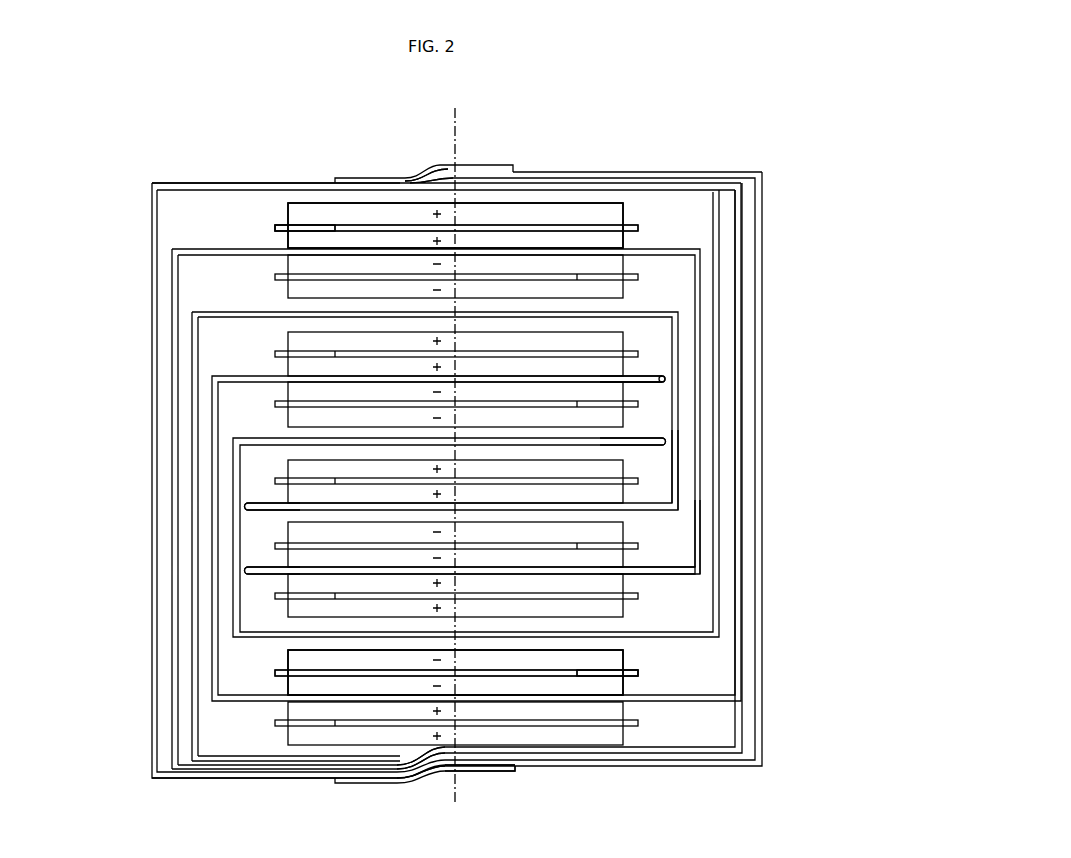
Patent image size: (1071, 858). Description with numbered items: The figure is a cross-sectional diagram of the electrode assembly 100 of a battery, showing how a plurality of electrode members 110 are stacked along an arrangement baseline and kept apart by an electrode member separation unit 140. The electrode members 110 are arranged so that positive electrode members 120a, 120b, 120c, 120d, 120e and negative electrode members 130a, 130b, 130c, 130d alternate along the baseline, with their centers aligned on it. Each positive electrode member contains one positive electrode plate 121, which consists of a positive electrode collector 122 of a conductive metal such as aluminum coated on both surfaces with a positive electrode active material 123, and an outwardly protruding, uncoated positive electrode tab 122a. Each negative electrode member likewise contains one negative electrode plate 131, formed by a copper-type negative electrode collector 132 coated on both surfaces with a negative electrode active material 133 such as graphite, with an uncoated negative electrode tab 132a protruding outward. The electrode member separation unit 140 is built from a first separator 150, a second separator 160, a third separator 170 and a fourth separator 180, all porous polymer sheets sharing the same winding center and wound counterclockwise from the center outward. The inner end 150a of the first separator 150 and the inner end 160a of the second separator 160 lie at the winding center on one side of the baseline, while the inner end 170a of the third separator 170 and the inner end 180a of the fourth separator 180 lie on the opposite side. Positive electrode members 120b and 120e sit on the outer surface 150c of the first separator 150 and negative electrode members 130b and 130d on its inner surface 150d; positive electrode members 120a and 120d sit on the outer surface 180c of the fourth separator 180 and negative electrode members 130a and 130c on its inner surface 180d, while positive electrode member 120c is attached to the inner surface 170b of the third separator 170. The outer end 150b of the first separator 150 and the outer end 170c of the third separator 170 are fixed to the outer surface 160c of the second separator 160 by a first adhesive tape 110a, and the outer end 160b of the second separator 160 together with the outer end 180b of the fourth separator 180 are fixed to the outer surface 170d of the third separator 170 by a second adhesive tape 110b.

The electrode assembly 100 is at (105, 109).
The electrode members 110 is at (97, 218).
The first adhesive tape 110a is at (442, 178).
The second adhesive tape 110b is at (352, 783).
The positive electrode member 120a is at (275, 228).
The positive electrode member 120b is at (275, 354).
The positive electrode member 120c is at (275, 481).
The positive electrode member 120d is at (275, 596).
The positive electrode member 120e is at (275, 723).
The positive electrode plate 121 is at (632, 217).
The positive electrode collector 122 is at (570, 228).
The positive electrode tab 122a is at (296, 225).
The positive electrode active material 123 is at (620, 238).
The negative electrode member 130a is at (275, 277).
The negative electrode member 130b is at (275, 404).
The negative electrode member 130c is at (275, 546).
The negative electrode member 130d is at (275, 673).
The negative electrode plate 131 is at (626, 687).
The negative electrode collector 132 is at (568, 673).
The negative electrode tab 132a is at (613, 668).
The negative electrode active material 133 is at (616, 688).
The electrode member separation unit 140 is at (752, 178).
The first separator 150 is at (663, 370).
The inner end of first separator 150a is at (668, 382).
The outer end of first separator 150b is at (440, 172).
The outer surface of first separator 150c is at (648, 372).
The inner surface of first separator 150d is at (652, 388).
The second separator 160 is at (660, 432).
The inner end of second separator 160a is at (668, 445).
The outer end of second separator 160b is at (395, 778).
The outer surface of second separator 160c is at (326, 183).
The third separator 170 is at (662, 514).
The inner end of third separator 170a is at (248, 506).
The inner surface of third separator 170b is at (616, 500).
The outer end of third separator 170c is at (455, 180).
The outer surface of third separator 170d is at (515, 771).
The fourth separator 180 is at (682, 574).
The inner end of fourth separator 180a is at (248, 570).
The outer end of fourth separator 180b is at (403, 770).
The outer surface of fourth separator 180c is at (616, 585).
The inner surface of fourth separator 180d is at (615, 560).